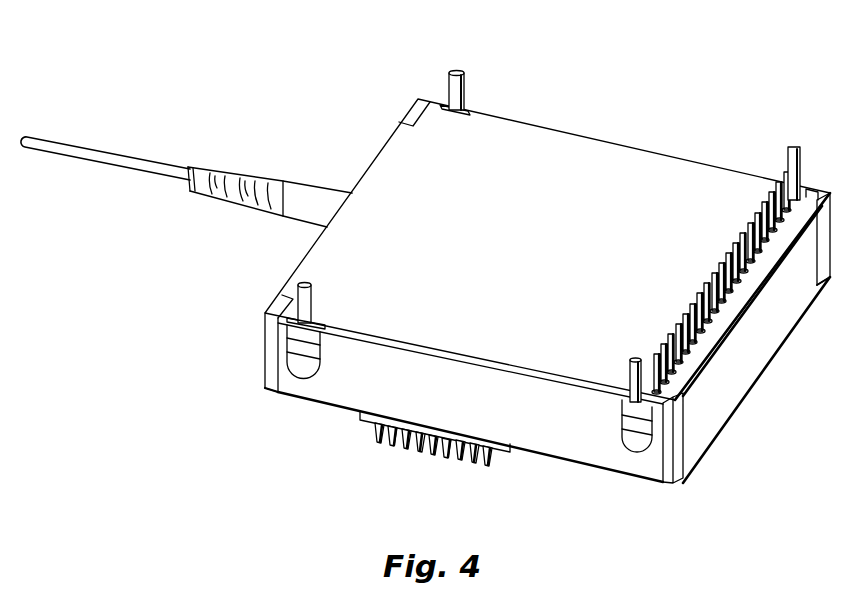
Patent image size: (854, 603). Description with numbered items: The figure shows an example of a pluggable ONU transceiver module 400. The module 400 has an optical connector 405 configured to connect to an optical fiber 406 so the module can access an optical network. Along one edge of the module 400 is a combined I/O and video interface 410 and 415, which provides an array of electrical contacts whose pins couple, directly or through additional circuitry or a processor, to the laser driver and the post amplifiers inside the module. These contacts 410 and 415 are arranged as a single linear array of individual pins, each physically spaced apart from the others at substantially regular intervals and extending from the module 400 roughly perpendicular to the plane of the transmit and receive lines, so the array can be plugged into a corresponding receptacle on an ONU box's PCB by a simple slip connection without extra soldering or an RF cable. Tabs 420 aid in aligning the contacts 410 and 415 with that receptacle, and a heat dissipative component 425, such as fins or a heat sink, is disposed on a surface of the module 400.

The pluggable ONU transceiver module 400 is at (548, 128).
The optical connector 405 is at (338, 180).
The optical fiber 406 is at (75, 143).
The combined I/O and video interface 410 is at (668, 320).
The combined I/O and video interface 415 is at (643, 347).
The tabs 420 is at (456, 68).
The heat dissipative component 425 is at (358, 412).